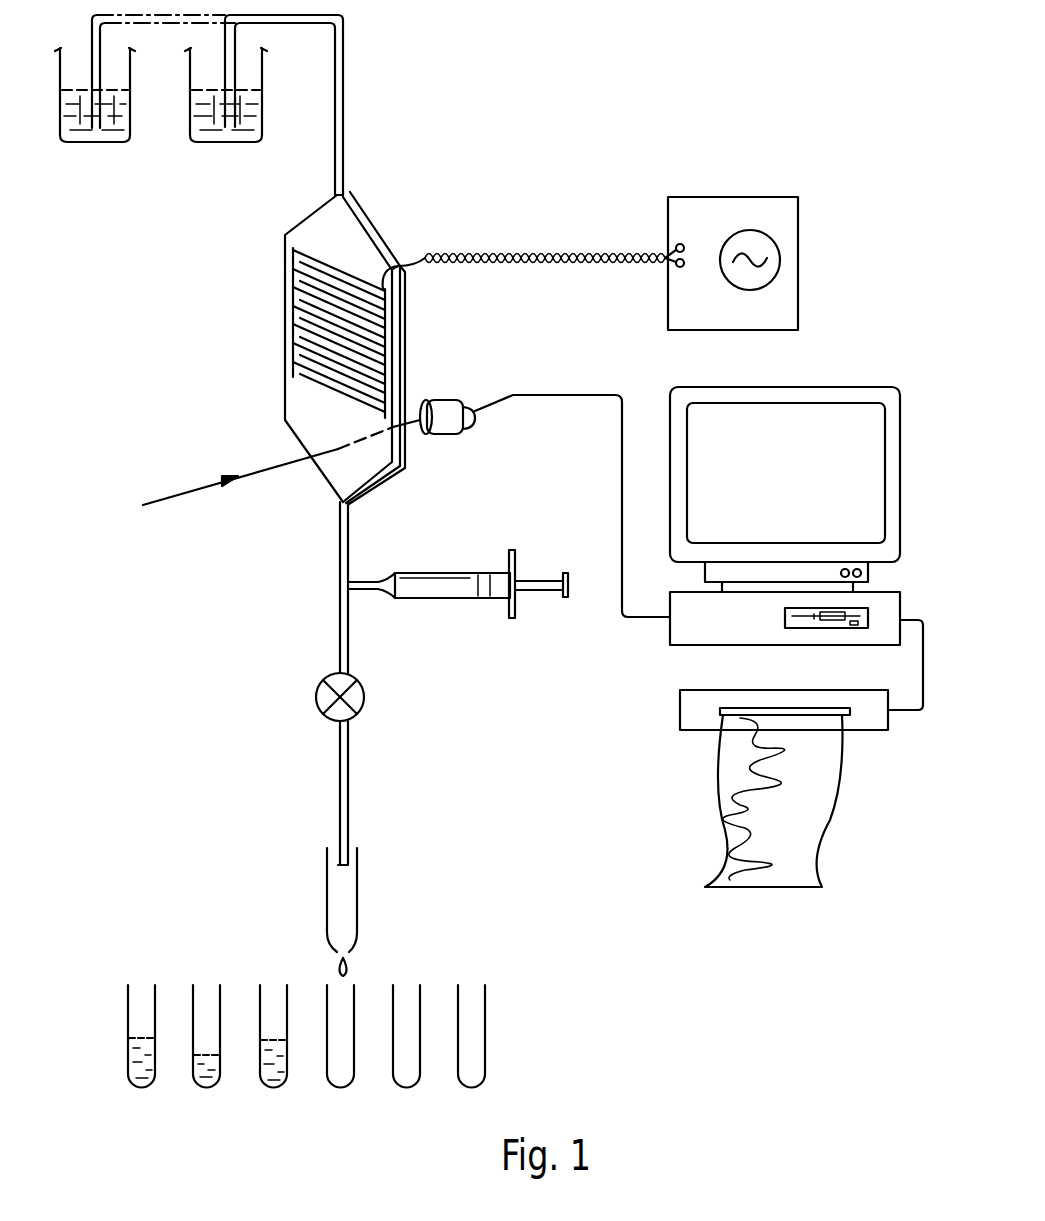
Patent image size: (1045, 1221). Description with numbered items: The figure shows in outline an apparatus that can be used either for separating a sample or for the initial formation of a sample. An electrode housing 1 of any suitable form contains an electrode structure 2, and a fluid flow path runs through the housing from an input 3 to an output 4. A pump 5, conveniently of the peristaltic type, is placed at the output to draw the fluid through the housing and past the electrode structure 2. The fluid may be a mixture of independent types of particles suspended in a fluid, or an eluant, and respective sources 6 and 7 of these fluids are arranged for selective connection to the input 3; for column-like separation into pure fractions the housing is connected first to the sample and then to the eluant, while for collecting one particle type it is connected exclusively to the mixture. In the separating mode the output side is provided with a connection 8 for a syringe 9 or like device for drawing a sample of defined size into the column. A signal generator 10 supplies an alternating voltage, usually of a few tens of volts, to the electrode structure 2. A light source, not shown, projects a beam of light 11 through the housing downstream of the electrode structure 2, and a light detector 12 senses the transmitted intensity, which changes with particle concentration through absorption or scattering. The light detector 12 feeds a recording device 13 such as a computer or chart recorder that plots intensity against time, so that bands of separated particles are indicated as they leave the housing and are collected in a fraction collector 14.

The electrode housing 1 is at (285, 345).
The electrode structure 2 is at (293, 299).
The input 3 is at (340, 194).
The output 4 is at (340, 505).
The pump 5 is at (364, 697).
The fluid source 6 is at (263, 100).
The fluid source 7 is at (131, 101).
The connection 8 is at (340, 582).
The syringe 9 is at (447, 573).
The signal generator 10 is at (752, 197).
The beam of light 11 is at (165, 503).
The light detector 12 is at (437, 400).
The recording device 13 is at (658, 636).
The fraction collector 14 is at (512, 1024).